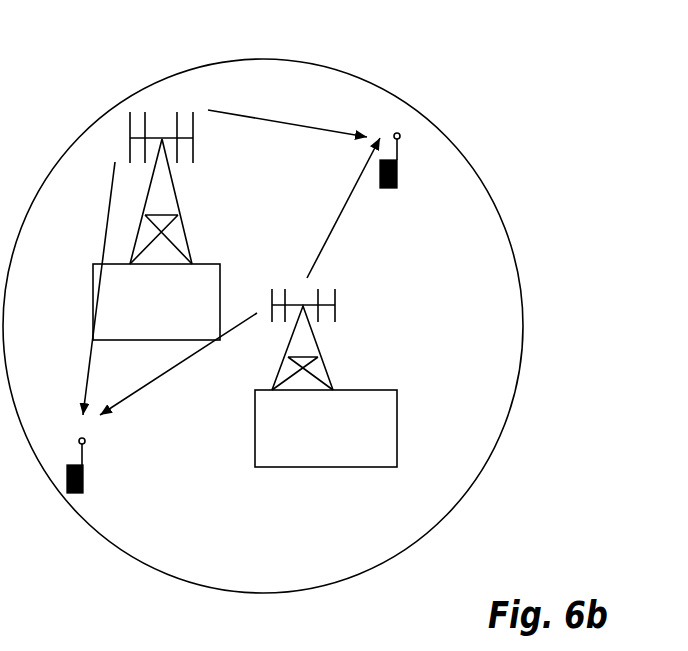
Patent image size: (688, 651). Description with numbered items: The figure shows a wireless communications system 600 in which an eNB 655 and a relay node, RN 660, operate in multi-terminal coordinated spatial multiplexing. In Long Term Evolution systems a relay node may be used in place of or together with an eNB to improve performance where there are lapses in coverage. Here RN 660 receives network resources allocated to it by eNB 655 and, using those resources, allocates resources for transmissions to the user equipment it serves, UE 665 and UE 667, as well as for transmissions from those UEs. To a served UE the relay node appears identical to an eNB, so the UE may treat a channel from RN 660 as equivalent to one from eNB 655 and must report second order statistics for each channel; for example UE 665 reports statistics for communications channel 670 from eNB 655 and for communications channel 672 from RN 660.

The wireless communication system 600 is at (549, 43).
The eNB 655 is at (92, 288).
The RN 660 is at (398, 418).
The UE 665 is at (400, 172).
The UE 667 is at (86, 480).
The communications channel 670 is at (265, 118).
The communications channel 672 is at (350, 198).